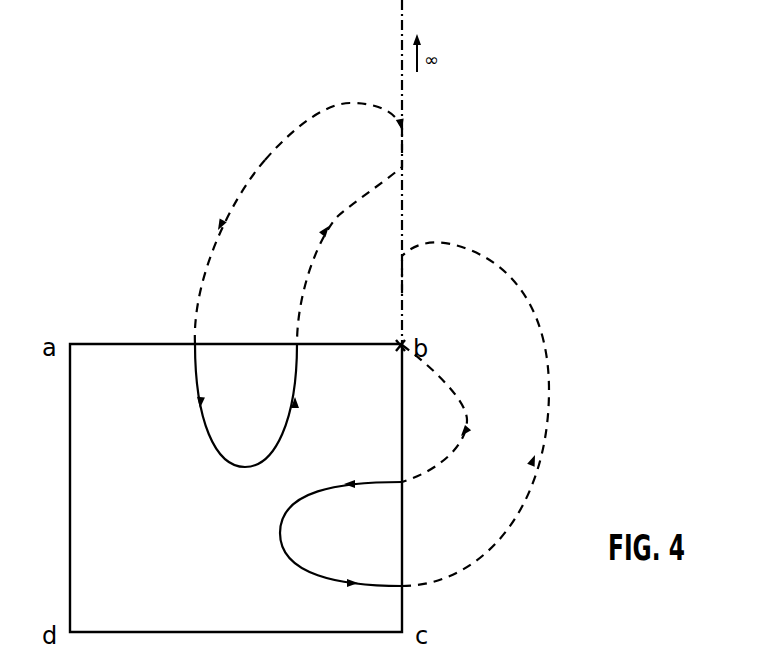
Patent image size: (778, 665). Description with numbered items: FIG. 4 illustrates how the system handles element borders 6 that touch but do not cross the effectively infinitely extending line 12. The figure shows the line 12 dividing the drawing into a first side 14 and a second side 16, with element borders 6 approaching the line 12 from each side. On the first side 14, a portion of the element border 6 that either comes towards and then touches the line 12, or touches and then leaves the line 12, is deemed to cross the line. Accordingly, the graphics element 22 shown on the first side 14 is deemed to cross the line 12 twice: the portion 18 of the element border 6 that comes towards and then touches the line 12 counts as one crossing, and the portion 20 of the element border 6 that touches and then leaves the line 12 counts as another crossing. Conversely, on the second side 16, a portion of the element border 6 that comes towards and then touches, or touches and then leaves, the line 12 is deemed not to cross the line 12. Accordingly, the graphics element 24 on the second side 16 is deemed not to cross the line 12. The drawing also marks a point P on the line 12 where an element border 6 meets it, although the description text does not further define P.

The element border 6 is at (398, 299).
The line 12 is at (408, 105).
The first side 14 is at (282, 83).
The second side 16 is at (540, 156).
The portion 18 is at (340, 208).
The portion 20 is at (350, 96).
The graphics element 22 is at (214, 213).
The graphics element 24 is at (560, 352).
The point P is at (392, 340).